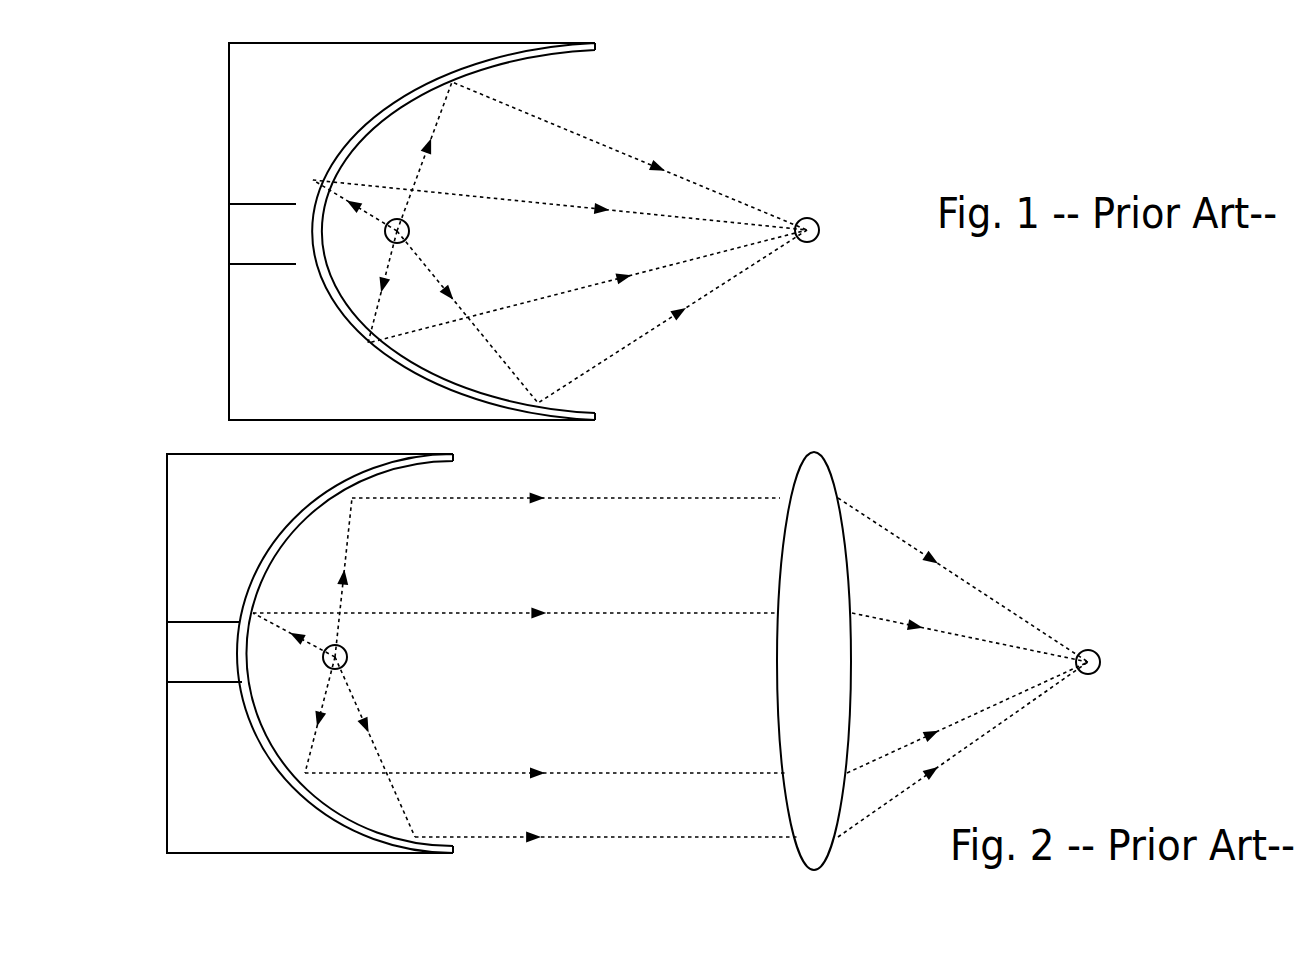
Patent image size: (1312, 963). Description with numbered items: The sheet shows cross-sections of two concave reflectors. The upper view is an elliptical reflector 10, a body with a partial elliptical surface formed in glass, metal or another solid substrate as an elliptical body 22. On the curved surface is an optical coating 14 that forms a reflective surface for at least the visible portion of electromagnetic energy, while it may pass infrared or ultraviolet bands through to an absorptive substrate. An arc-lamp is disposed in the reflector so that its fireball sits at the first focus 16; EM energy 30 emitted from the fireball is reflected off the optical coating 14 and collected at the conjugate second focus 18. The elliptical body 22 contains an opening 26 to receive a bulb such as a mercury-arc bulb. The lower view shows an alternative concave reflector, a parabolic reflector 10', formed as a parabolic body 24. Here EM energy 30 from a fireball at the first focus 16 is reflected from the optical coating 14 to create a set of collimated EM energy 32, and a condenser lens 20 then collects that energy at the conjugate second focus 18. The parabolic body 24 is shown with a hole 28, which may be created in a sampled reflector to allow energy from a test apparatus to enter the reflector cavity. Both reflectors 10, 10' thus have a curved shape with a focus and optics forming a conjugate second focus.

In FIG. 1, the elliptical reflector 10 is at (509, 231).
In FIG. 2, the parabolic reflector 10' is at (621, 628).
In FIG. 1, the optical coating 14 is at (570, 57).
In FIG. 2, the optical coating 14 is at (440, 460).
In FIG. 1, the first focus F1 16 is at (387, 238).
In FIG. 2, the first focus F1 16 is at (326, 664).
In FIG. 1, the second focus F2 18 is at (815, 219).
In FIG. 2, the second focus F2 18 is at (1092, 651).
In FIG. 2, the condenser lens 20 is at (830, 462).
In FIG. 1, the elliptical body 22 is at (377, 231).
In FIG. 2, the parabolic body 24 is at (277, 653).
In FIG. 1, the opening 26 is at (280, 242).
In FIG. 2, the hole 28 is at (215, 660).
In FIG. 1, the EM energy 30 is at (758, 178).
In FIG. 2, the EM energy 30 is at (1034, 600).
In FIG. 2, the collimated EM energy 32 is at (764, 488).